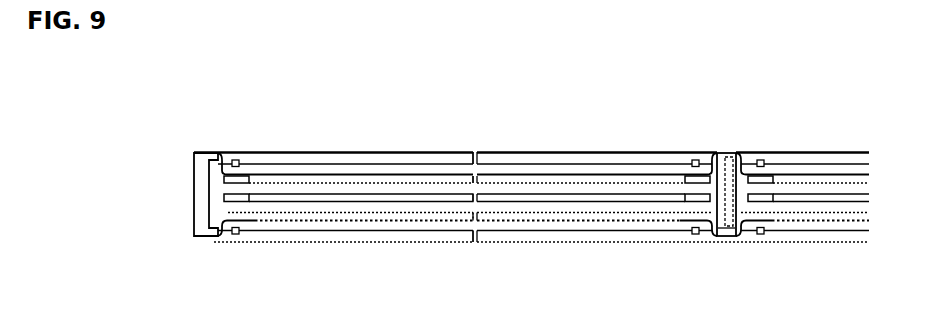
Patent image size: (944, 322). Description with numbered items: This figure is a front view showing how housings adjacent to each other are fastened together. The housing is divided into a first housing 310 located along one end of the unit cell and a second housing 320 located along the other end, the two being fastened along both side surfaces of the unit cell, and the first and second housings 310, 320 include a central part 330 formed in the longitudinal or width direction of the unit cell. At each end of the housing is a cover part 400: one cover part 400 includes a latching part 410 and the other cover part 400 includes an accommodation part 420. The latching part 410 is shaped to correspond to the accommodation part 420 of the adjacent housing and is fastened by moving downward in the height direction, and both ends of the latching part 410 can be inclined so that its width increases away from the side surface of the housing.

The first housing 310 is at (589, 156).
The second housing 320 is at (343, 156).
The central part 330 is at (474, 152).
The cover part 400 is at (424, 233).
The latching part 410 is at (731, 208).
The accommodation part 420 is at (201, 200).